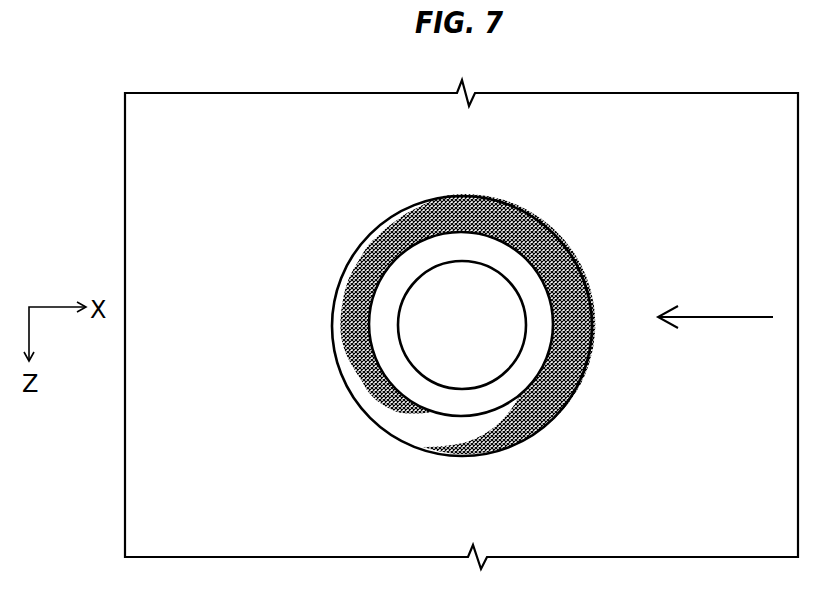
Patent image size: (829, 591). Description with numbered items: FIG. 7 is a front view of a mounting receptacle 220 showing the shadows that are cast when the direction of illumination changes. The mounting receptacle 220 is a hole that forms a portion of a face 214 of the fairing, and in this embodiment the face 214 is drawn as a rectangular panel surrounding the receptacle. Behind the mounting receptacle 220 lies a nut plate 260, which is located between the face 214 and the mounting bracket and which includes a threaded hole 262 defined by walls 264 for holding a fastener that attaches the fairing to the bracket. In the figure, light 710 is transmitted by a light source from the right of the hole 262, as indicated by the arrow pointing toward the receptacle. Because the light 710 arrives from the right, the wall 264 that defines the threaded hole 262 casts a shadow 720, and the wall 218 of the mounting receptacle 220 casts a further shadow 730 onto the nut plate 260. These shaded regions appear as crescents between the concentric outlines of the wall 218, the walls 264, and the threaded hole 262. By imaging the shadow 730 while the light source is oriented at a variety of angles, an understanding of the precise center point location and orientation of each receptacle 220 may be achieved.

The face 214 is at (703, 92).
The wall 218 is at (402, 210).
The mounting receptacle 220 is at (318, 277).
The nut plate 260 is at (403, 425).
The threaded hole 262 is at (470, 292).
The walls 264 is at (472, 417).
The light 710 is at (730, 316).
The shadow 720 is at (365, 355).
The shadow 730 is at (555, 262).